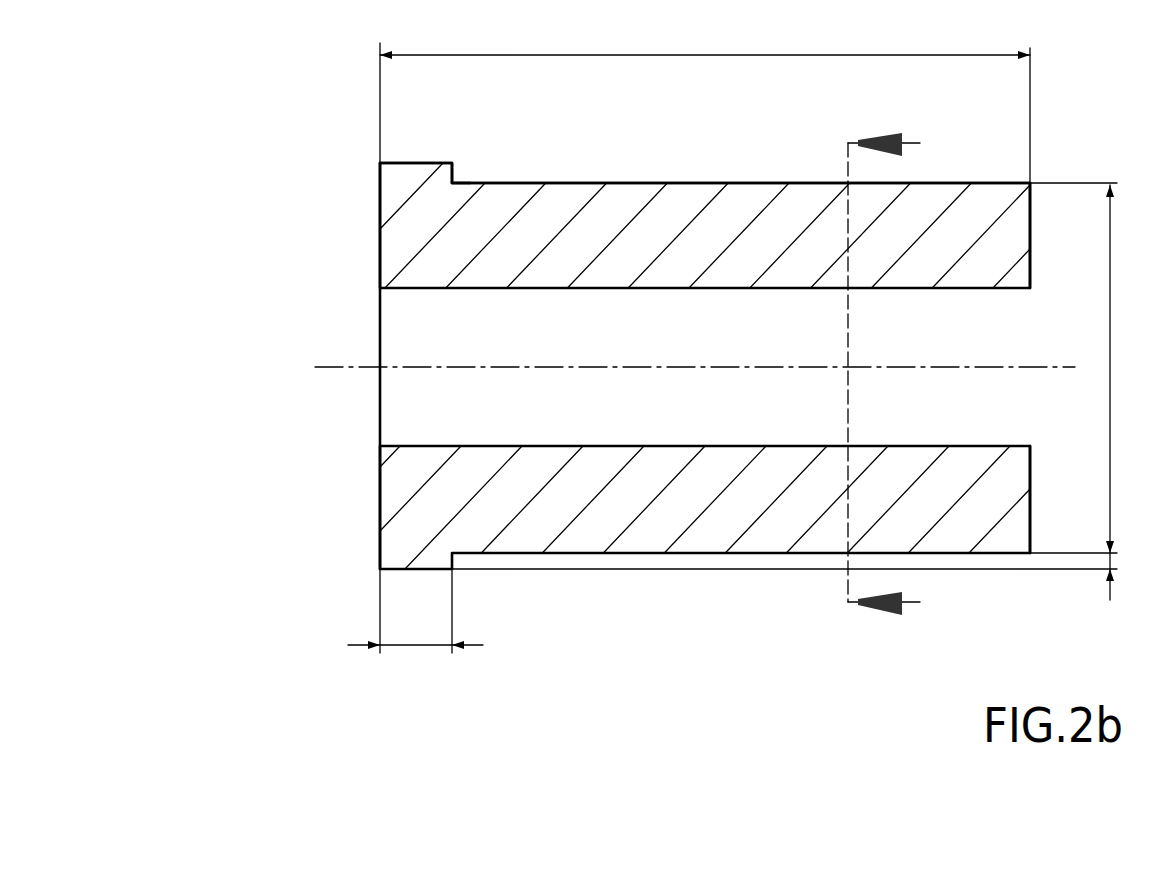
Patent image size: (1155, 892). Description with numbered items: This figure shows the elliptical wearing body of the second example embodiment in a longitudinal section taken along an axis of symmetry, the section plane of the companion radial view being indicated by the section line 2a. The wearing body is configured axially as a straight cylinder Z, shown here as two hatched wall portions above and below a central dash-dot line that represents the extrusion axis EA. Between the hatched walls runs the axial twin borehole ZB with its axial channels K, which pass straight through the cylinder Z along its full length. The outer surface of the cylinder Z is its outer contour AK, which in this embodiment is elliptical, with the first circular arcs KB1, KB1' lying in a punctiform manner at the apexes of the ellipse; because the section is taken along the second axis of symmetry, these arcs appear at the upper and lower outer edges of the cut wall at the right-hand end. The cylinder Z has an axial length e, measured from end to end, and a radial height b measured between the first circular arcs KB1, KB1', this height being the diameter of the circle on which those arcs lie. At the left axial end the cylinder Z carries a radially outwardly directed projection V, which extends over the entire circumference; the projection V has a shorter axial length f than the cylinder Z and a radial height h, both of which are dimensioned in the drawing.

The axial twin borehole ZB is at (403, 423).
The axial channel K is at (705, 366).
The projection V is at (455, 170).
The extrusion axis EA is at (325, 367).
The cylinder Z is at (273, 522).
The outer contour AK is at (987, 185).
The first circular arc KB1 is at (1070, 219).
The first circular arc KB1' is at (1048, 541).
The section line 2a is at (894, 375).
The axial length e is at (705, 105).
The radial height b is at (1073, 391).
The radial height of the projection h is at (748, 571).
The axial length of the projection f is at (415, 611).